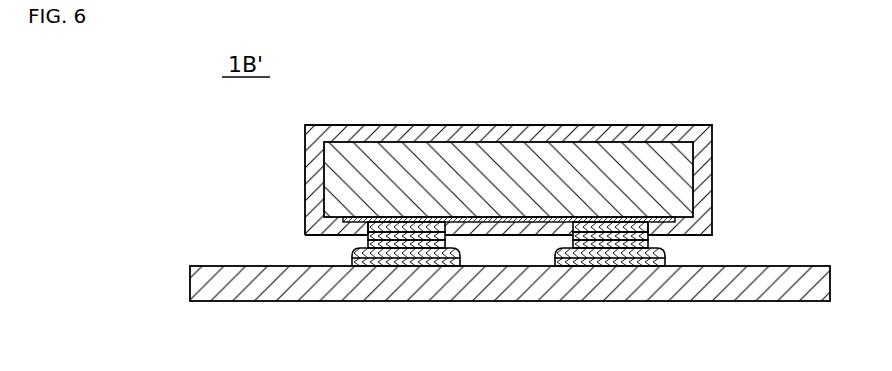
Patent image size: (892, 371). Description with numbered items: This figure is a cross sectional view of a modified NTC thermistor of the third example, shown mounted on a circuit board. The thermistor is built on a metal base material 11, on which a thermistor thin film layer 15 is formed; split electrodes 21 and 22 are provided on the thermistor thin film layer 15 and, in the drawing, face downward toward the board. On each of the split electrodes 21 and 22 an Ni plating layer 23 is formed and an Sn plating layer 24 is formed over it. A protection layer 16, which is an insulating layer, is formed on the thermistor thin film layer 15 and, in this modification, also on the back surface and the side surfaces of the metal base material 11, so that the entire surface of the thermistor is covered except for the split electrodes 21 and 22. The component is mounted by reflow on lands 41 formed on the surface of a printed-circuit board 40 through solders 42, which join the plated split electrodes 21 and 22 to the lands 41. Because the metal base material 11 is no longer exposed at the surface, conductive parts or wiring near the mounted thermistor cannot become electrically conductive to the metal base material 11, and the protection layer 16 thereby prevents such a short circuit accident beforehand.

The metal base material 11 is at (501, 162).
The thermistor thin film layer 15 is at (566, 221).
The protection layer 16 is at (587, 125).
The split electrode 21 is at (408, 221).
The split electrode 22 is at (625, 228).
The Ni plating layer 23 is at (429, 229).
The Sn plating layer 24 is at (368, 240).
The printed-circuit board 40 is at (290, 301).
The land 41 is at (380, 267).
The solder 42 is at (462, 250).